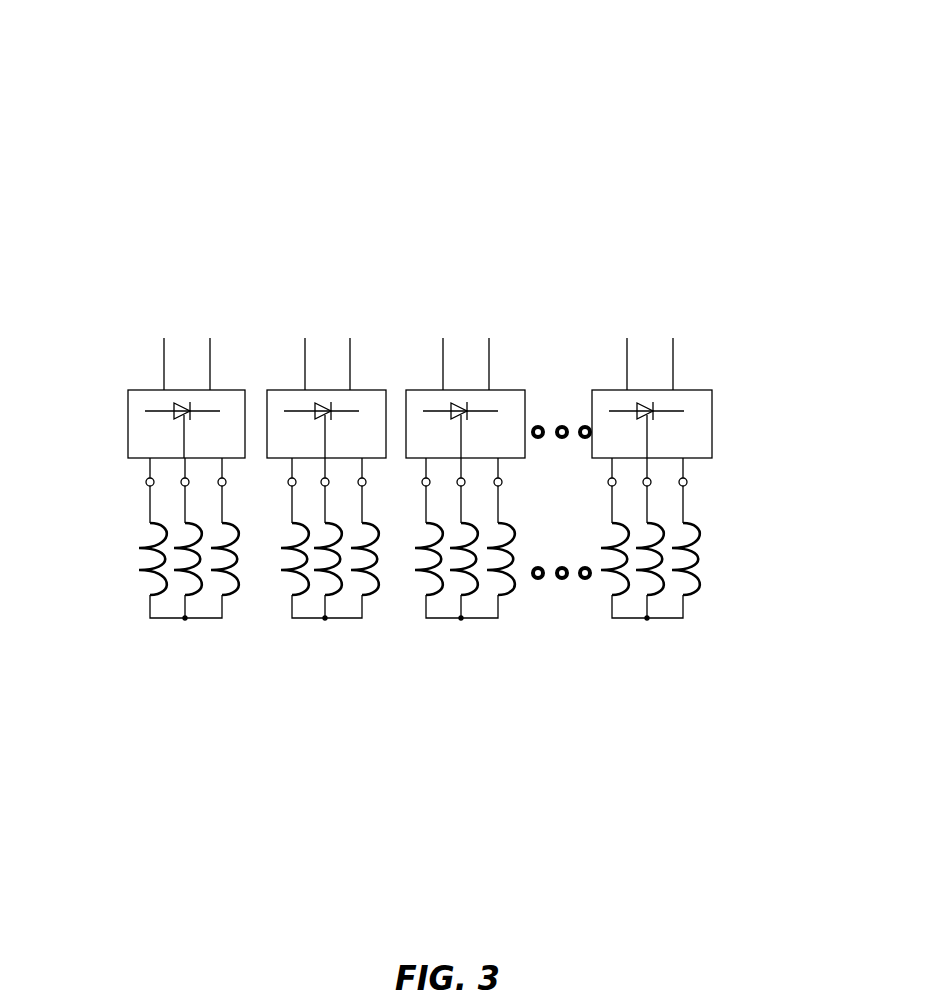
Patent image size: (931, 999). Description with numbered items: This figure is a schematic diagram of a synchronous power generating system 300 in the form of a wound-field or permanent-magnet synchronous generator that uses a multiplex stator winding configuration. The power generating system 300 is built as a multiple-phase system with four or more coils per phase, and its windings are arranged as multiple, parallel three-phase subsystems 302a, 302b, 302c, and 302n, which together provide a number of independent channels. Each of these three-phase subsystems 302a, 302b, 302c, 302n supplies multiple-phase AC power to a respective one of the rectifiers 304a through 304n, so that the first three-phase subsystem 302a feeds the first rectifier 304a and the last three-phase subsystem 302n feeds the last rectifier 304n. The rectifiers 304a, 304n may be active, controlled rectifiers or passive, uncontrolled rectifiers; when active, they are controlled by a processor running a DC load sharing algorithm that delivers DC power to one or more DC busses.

The power generating system 300 is at (688, 102).
The 3-phase subsystem 302a is at (181, 654).
The 3-phase subsystem 302b is at (343, 655).
The 3-phase subsystem 302c is at (464, 652).
The 3-phase subsystem 302n is at (656, 656).
The rectifier 304a is at (128, 447).
The rectifier 304n is at (712, 440).